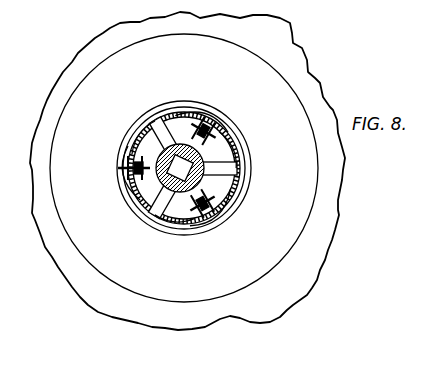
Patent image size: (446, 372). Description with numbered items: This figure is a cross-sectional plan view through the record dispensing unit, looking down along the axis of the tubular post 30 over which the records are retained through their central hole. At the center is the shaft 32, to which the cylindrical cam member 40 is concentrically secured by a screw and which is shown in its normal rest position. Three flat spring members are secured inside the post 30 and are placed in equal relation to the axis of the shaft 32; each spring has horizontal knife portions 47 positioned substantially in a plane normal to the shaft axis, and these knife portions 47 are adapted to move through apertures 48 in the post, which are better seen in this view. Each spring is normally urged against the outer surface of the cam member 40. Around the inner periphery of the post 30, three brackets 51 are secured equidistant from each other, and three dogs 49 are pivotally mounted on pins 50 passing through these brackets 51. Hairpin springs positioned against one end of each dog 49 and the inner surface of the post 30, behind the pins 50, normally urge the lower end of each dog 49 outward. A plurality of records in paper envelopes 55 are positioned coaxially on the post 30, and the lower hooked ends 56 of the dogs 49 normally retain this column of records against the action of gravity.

The tubular post 30 is at (180, 228).
The shaft 32 is at (249, 150).
The cylindrical cam member 40 is at (152, 150).
The horizontal knife portions 47 is at (147, 138).
The apertures 48 is at (153, 117).
The dogs 49 is at (176, 126).
The pins 50 is at (228, 130).
The brackets 51 is at (203, 122).
The paper envelopes 55 is at (339, 215).
The lower hooked ends 56 is at (211, 120).